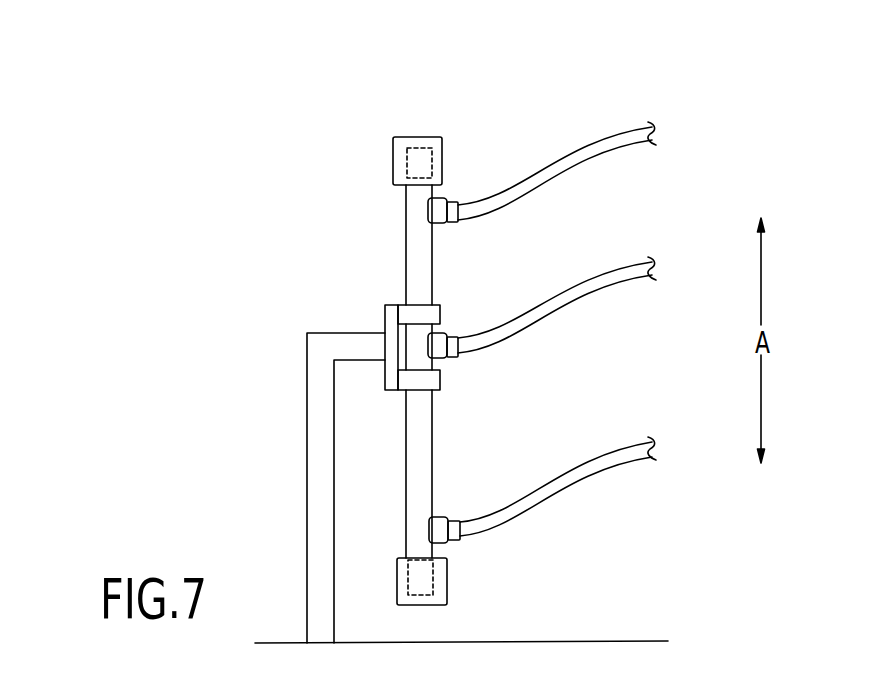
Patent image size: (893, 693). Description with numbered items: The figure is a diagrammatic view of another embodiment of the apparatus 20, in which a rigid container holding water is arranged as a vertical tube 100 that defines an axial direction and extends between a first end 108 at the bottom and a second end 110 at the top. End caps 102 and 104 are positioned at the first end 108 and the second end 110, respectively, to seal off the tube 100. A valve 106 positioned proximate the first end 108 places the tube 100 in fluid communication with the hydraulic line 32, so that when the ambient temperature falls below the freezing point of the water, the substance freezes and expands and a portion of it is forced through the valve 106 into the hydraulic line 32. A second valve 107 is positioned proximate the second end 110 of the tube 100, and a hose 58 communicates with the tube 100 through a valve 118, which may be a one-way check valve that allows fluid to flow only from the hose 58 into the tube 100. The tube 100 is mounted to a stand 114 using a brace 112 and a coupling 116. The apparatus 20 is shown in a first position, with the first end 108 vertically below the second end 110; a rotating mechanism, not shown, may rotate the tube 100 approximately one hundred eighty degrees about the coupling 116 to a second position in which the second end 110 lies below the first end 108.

The apparatus 20 is at (140, 175).
The hydraulic line 32 is at (613, 130).
The hose 58 is at (613, 268).
The tube 100 is at (406, 232).
The end cap 102 is at (447, 580).
The end cap 104 is at (442, 152).
The valve 106 is at (442, 517).
The second valve 107 is at (445, 198).
The first end 108 is at (500, 585).
The second end 110 is at (410, 138).
The brace 112 is at (457, 312).
The stand 114 is at (308, 435).
The coupling 116 is at (382, 343).
The valve 118 is at (442, 358).